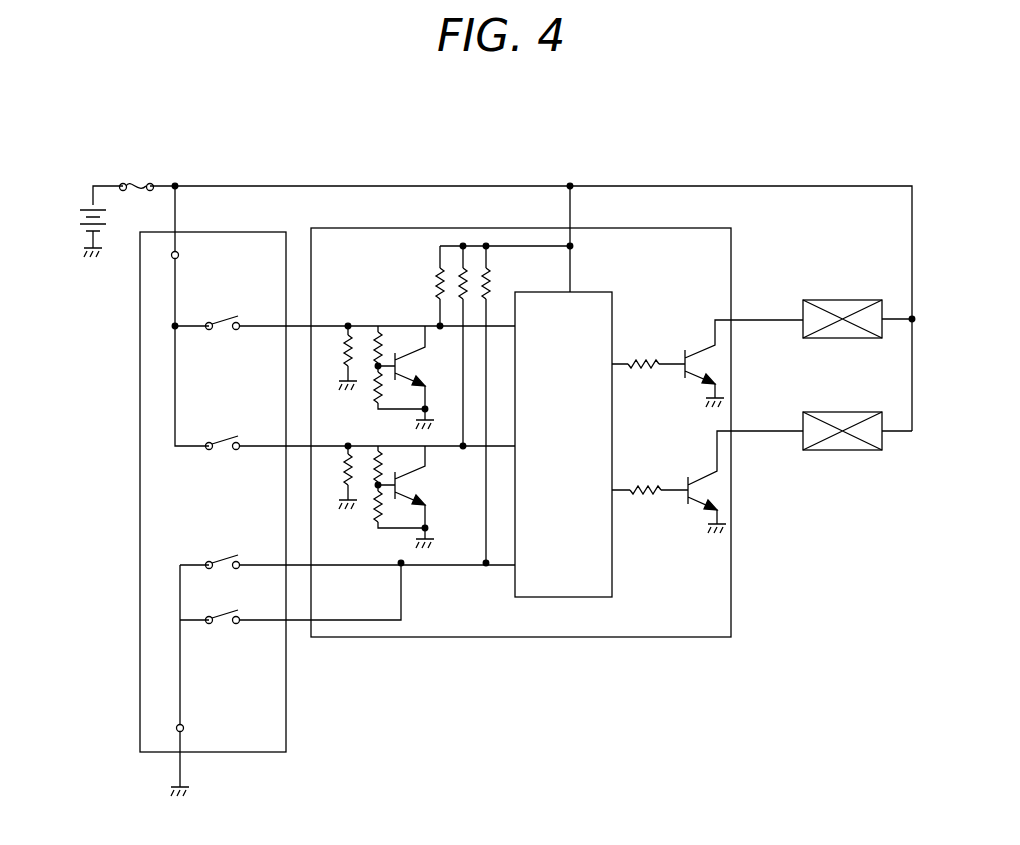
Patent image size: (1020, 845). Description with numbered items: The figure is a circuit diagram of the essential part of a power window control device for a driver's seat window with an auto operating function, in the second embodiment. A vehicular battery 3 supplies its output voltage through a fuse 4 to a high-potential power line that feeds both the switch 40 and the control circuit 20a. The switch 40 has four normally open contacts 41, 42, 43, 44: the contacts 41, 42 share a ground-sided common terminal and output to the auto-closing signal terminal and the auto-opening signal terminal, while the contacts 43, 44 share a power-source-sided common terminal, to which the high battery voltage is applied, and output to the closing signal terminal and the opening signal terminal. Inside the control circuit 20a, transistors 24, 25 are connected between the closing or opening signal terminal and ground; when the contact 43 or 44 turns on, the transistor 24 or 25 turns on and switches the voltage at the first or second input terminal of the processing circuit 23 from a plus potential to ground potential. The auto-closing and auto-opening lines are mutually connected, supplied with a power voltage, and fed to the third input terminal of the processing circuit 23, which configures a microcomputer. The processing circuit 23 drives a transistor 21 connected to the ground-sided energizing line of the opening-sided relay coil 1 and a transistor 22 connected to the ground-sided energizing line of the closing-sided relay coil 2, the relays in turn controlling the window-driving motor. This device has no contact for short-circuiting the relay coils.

The opening-sided relay coil 1 is at (840, 299).
The closing-sided relay coil 2 is at (840, 451).
The vehicular battery 3 is at (80, 210).
The fuse 4 is at (135, 184).
The control circuit 20a is at (731, 262).
The transistor 21 is at (731, 364).
The transistor 22 is at (731, 490).
The processing circuit 23 is at (586, 291).
The transistor 24 is at (418, 471).
The transistor 25 is at (418, 352).
The switch 40 is at (139, 356).
The contact 41 is at (206, 561).
The contact 42 is at (221, 627).
The contact 43 is at (221, 453).
The contact 44 is at (221, 333).